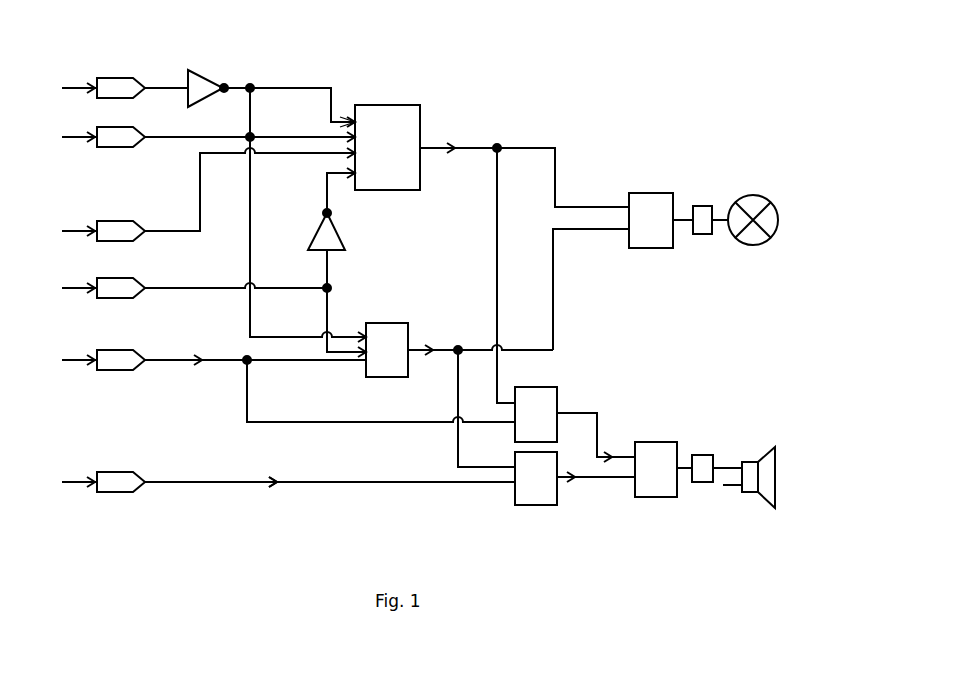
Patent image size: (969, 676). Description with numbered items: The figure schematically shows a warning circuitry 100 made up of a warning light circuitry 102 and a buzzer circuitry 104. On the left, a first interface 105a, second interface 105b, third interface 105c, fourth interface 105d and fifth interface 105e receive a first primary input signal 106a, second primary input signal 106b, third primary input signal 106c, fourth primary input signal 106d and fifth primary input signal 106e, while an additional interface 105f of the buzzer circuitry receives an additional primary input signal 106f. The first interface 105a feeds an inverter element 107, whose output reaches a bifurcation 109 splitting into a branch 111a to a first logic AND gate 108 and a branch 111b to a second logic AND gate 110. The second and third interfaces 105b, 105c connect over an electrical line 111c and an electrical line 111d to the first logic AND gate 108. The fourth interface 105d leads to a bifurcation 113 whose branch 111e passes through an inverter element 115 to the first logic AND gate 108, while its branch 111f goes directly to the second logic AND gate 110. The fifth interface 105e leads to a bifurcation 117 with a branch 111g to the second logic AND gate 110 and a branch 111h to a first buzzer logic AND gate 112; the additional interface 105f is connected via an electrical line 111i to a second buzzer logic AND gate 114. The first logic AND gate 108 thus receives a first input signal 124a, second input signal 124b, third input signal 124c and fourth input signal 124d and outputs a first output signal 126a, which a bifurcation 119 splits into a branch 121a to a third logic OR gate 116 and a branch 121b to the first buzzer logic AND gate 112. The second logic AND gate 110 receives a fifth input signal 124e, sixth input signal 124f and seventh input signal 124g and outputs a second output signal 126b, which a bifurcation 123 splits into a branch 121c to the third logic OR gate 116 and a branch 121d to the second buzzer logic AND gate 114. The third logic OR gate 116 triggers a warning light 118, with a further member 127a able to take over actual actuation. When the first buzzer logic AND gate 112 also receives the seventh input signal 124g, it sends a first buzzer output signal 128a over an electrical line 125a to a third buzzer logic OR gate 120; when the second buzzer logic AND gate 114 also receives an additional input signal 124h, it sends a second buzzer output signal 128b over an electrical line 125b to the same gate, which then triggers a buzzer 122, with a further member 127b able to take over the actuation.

The warning circuitry 100 is at (640, 68).
The warning light circuitry 102 is at (577, 323).
The buzzer circuitry 104 is at (640, 390).
The first interface 105a is at (120, 78).
The second interface 105b is at (120, 127).
The third interface 105c is at (120, 221).
The fourth interface 105d is at (120, 278).
The fifth interface 105e is at (120, 350).
The additional interface 105f is at (120, 472).
The first primary input signal 106a is at (72, 87).
The second primary input signal 106b is at (72, 136).
The third primary input signal 106c is at (72, 230).
The fourth primary input signal 106d is at (72, 287).
The fifth primary input signal 106e is at (72, 359).
The additional primary input signal 106f is at (72, 481).
The inverter element 107 is at (195, 70).
The first logic AND gate 108 is at (410, 103).
The bifurcation 109 is at (250, 84).
The second logic AND gate 110 is at (400, 320).
The branch 111a is at (296, 87).
The branch 111b is at (251, 178).
The electrical line 111c is at (282, 136).
The electrical line 111d is at (199, 176).
The branch 111e is at (328, 198).
The branch 111f is at (328, 288).
The branch 111g is at (282, 363).
The branch 111h is at (378, 425).
The electrical line 111i is at (393, 484).
The first buzzer logic AND gate 112 is at (556, 386).
The bifurcation 113 is at (324, 286).
The second buzzer logic AND gate 114 is at (536, 507).
The inverter element 115 is at (338, 234).
The third logic OR gate 116 is at (652, 192).
The bifurcation 117 is at (244, 364).
The warning light 118 is at (757, 196).
The bifurcation 119 is at (498, 143).
The third buzzer logic OR gate 120 is at (658, 498).
The branch 121a is at (568, 206).
The branch 121b is at (497, 216).
The branch 121c is at (553, 328).
The branch 121d is at (475, 464).
The buzzer 122 is at (777, 458).
The bifurcation 123 is at (458, 345).
The first input signal 124a is at (342, 114).
The second input signal 124b is at (348, 134).
The third input signal 124c is at (350, 151).
The fourth input signal 124d is at (348, 173).
The fifth input signal 124e is at (345, 334).
The sixth input signal 124f is at (355, 350).
The seventh input signal 124g is at (200, 355).
The additional input signal 124h is at (276, 478).
The electrical line 125a is at (585, 412).
The electrical line 125b is at (600, 480).
The first output signal 126a is at (460, 146).
The second output signal 126b is at (438, 362).
The further member 127a is at (704, 205).
The further member 127b is at (704, 454).
The first buzzer output signal 128a is at (610, 455).
The second buzzer output signal 128b is at (572, 474).